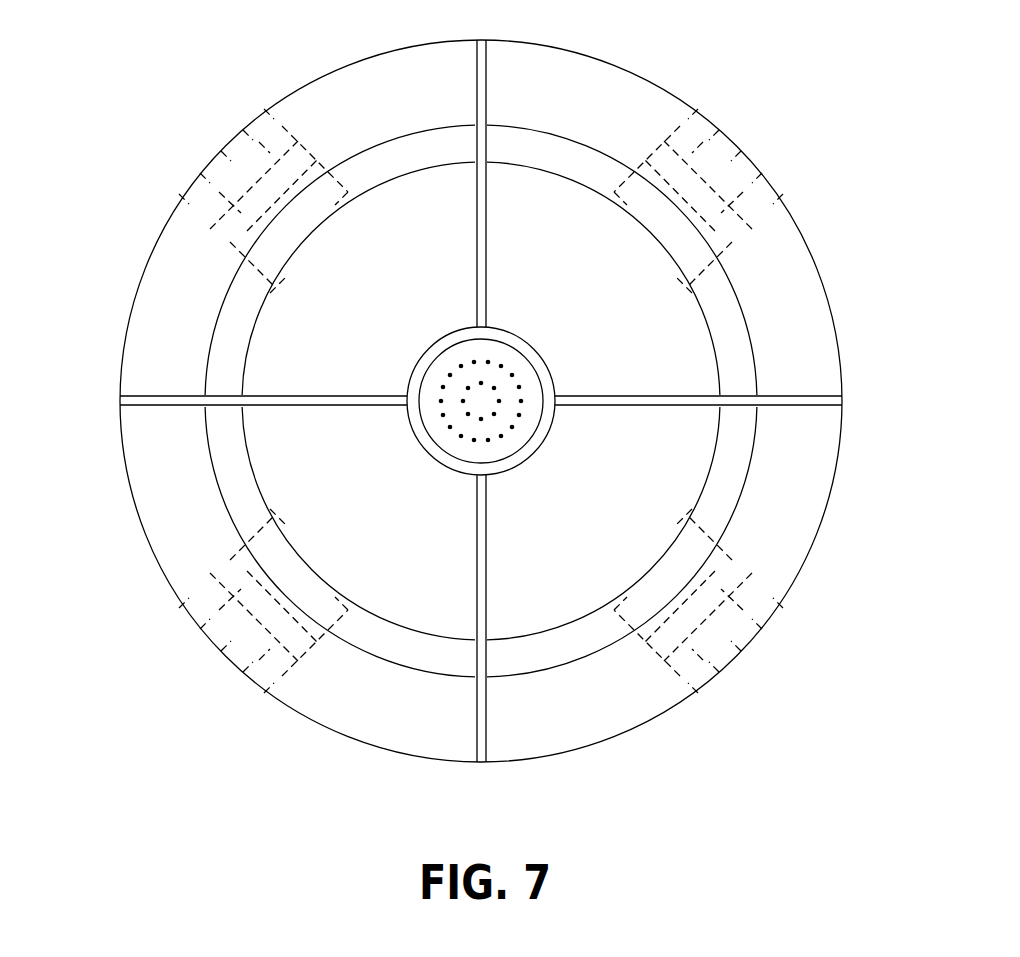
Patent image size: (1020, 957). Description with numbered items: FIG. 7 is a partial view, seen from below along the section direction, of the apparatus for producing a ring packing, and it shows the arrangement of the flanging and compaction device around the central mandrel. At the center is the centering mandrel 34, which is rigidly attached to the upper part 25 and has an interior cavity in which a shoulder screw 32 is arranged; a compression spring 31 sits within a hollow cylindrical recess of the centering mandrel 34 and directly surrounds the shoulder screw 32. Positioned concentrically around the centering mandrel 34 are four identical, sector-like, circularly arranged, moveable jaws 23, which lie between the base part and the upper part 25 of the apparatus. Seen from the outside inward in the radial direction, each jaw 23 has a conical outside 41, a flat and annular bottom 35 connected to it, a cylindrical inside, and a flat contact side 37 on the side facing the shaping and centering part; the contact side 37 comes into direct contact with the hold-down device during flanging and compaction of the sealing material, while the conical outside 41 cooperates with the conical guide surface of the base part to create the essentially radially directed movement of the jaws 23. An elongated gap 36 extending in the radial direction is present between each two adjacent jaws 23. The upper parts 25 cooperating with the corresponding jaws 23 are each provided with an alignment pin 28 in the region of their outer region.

The jaw 23 is at (233, 170).
The upper part 25 is at (700, 116).
The alignment pin 28 is at (481, 363).
The compression spring 31 is at (497, 366).
The shoulder screw 32 is at (487, 401).
The centering mandrel 34 is at (505, 447).
The flat and annular bottom 35 is at (416, 155).
The elongated gap 36 is at (483, 228).
The flat contact side 37 is at (572, 262).
The conical outside 41 is at (786, 381).